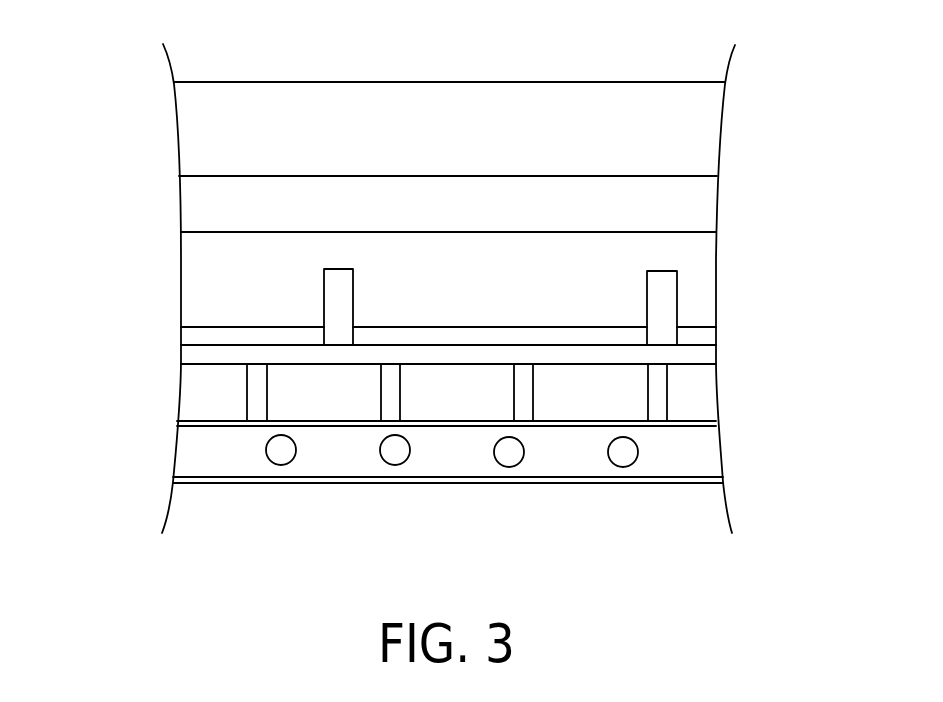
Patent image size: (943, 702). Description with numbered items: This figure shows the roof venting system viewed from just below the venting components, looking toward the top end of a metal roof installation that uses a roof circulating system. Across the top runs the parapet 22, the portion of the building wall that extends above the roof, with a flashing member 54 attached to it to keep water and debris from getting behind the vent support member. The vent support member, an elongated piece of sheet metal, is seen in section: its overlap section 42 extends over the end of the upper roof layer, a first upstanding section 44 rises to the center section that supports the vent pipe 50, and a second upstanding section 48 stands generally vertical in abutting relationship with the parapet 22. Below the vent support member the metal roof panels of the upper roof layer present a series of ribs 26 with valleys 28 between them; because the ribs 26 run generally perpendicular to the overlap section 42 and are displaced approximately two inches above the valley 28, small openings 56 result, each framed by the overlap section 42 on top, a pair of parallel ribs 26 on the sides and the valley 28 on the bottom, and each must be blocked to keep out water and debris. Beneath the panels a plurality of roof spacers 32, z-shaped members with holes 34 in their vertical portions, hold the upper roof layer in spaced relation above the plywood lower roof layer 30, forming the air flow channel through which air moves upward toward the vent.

The parapet 22 is at (706, 139).
The flashing member 54 is at (700, 209).
The vent pipe 50 is at (306, 308).
The second upstanding section 48 is at (203, 334).
The first upstanding section 44 is at (700, 357).
The overlap section 42 is at (695, 368).
The ribs 26 is at (668, 412).
The openings 56 is at (443, 402).
The valleys 28 is at (197, 415).
The roof spacers 32 is at (203, 452).
The lower roof layer 30 is at (562, 484).
The holes 34 is at (281, 466).